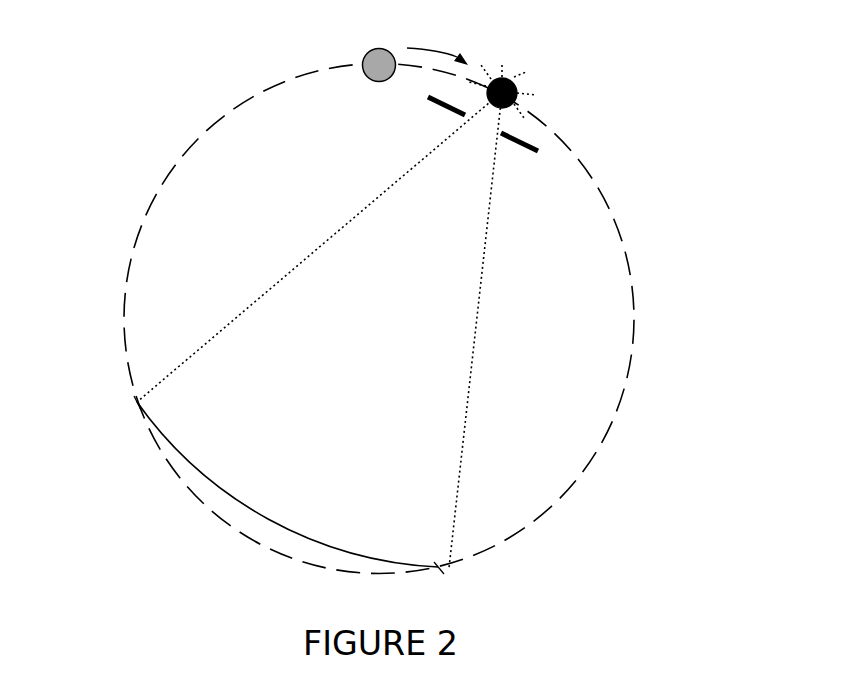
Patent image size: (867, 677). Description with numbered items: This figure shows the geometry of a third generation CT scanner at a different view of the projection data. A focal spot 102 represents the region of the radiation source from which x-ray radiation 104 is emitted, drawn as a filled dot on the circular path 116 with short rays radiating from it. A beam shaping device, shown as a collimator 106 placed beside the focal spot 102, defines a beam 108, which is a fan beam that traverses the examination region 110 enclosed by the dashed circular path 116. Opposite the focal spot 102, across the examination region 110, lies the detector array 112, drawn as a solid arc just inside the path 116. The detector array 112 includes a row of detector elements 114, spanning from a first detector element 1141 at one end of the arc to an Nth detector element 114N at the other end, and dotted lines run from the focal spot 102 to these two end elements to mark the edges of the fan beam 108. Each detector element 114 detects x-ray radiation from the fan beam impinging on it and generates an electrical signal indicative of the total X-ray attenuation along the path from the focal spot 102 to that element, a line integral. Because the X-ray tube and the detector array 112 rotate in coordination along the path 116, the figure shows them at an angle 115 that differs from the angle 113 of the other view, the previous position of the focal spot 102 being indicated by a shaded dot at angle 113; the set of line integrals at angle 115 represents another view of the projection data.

The focal spot 102 is at (509, 80).
The x-ray radiation 104 is at (562, 82).
The collimator 106 is at (528, 141).
The beam 108 is at (477, 330).
The examination region 110 is at (380, 432).
The detector array 112 is at (297, 535).
The angle 113 is at (342, 34).
The detector element 114 is at (89, 411).
The first detector element 1141 is at (137, 410).
The Nth detector element 114N is at (438, 567).
The angle 115 is at (474, 34).
The circular path 116 is at (635, 317).